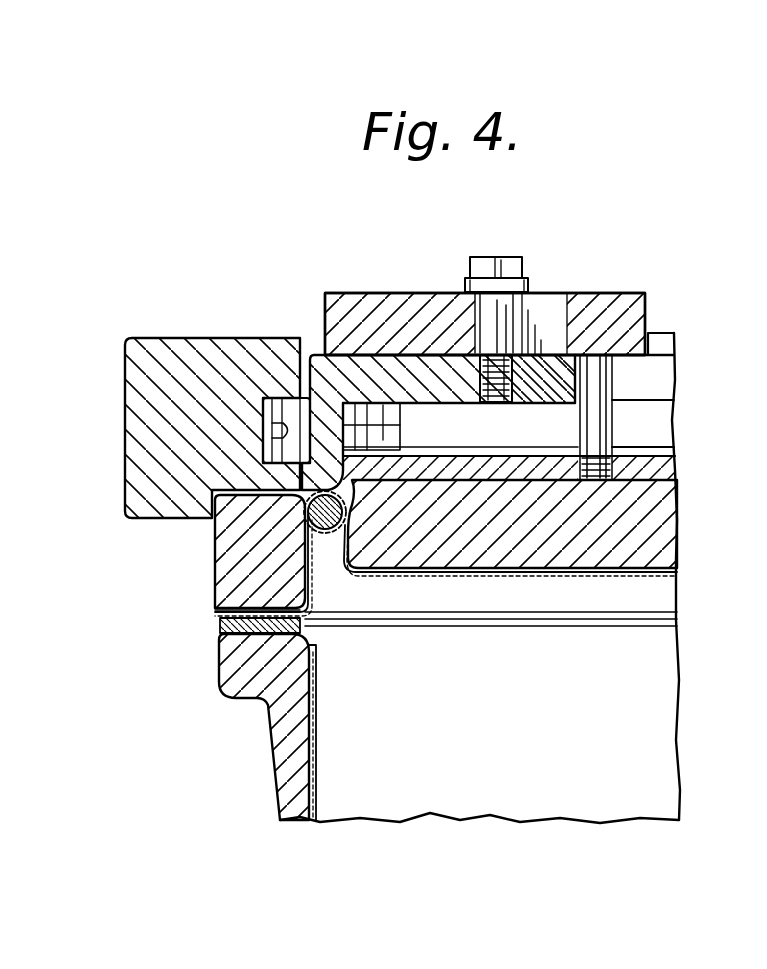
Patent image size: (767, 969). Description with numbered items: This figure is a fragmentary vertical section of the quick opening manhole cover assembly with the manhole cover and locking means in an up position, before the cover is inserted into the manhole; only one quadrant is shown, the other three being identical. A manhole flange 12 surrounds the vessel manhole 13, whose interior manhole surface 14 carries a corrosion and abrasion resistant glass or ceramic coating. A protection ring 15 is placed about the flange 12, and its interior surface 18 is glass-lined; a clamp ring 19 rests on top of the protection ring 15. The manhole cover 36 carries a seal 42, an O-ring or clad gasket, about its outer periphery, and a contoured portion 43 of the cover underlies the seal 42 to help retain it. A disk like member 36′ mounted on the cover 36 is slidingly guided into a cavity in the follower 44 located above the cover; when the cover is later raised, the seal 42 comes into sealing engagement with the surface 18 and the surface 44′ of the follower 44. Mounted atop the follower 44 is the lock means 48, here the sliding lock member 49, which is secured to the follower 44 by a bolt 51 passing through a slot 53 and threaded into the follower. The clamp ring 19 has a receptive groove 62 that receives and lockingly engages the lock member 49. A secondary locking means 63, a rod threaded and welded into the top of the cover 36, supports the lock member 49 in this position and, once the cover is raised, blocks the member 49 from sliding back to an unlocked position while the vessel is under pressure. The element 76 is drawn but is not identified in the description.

The manhole flange 12 is at (240, 700).
The vessel manhole 13 is at (645, 730).
The interior manhole surface 14 is at (317, 795).
The protection ring 15 is at (237, 568).
The interior surface of protection ring 18 is at (214, 611).
The clamp ring 19 is at (146, 380).
The manhole cover 36 is at (550, 560).
The disk like member 36′ is at (655, 463).
The seal 42 is at (214, 538).
The portion of manhole cover 43 is at (340, 583).
The follower means 44 is at (325, 375).
The surface of follower 44′ is at (262, 481).
The lock means 48 is at (432, 289).
The sliding lock member 49 is at (398, 300).
The bolt 51 is at (498, 262).
The slot 53 is at (556, 318).
The receptive groove 62 is at (284, 438).
The secondary locking means 63 is at (612, 372).
The gasket 76 is at (220, 626).